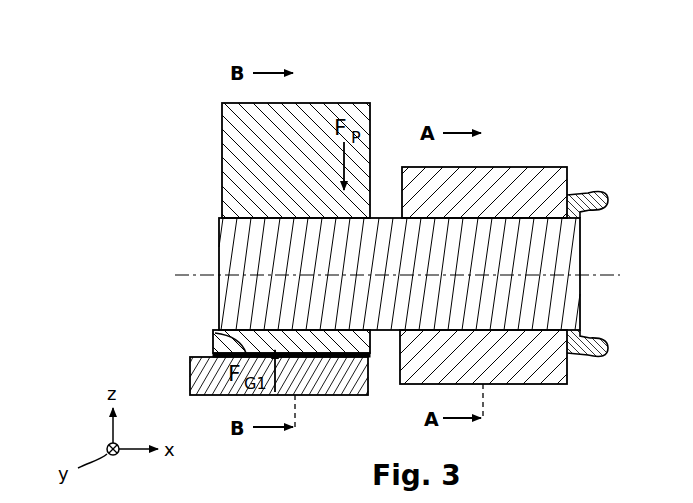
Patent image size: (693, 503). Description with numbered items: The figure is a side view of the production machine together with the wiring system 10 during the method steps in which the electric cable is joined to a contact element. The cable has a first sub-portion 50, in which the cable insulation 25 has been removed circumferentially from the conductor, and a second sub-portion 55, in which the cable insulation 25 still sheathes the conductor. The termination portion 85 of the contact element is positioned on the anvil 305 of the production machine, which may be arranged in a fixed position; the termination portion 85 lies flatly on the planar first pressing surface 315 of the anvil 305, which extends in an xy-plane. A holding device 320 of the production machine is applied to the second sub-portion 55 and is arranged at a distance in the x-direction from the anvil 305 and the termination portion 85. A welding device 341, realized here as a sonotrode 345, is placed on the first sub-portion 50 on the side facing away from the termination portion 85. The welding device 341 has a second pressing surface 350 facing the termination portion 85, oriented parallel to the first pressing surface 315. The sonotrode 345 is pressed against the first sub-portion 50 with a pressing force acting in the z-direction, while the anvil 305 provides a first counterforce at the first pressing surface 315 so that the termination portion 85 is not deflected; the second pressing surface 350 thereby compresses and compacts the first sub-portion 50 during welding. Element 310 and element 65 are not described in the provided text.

The wiring system 10 is at (157, 60).
The sonotrode 345 is at (220, 160).
The welding device 341 is at (245, 138).
The first sub-portion 50 is at (370, 103).
The second sub-portion 55 is at (567, 167).
The second pressing surface 350 is at (283, 221).
The termination portion 85 is at (325, 345).
The first pressing surface 315 is at (215, 332).
The friction layer 310 is at (303, 358).
The anvil 305 is at (357, 381).
The holding device 320 is at (552, 390).
The cable insulation 25 is at (590, 352).
The upper flange 65 is at (611, 277).